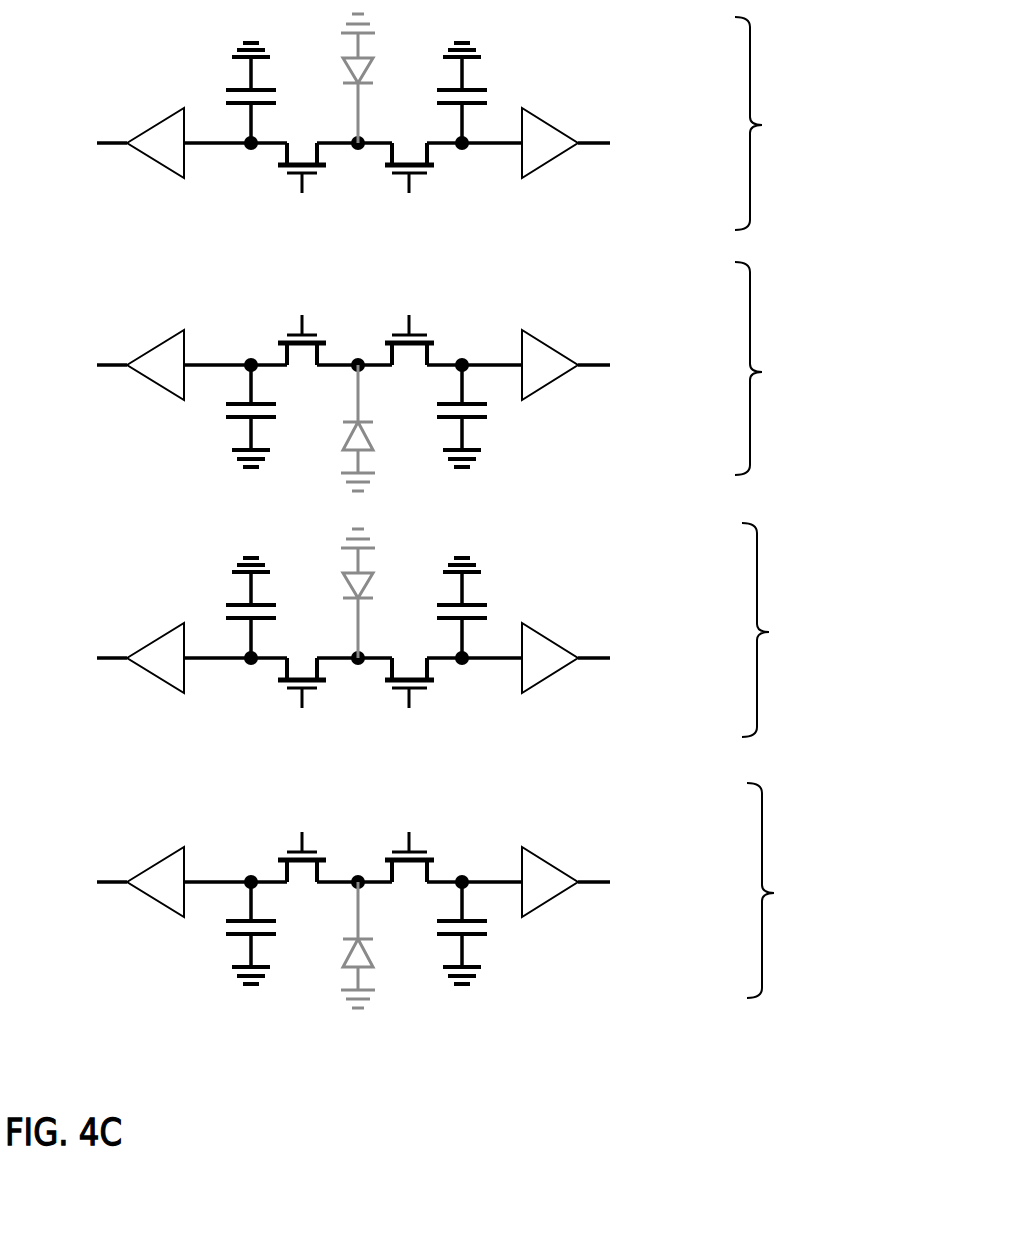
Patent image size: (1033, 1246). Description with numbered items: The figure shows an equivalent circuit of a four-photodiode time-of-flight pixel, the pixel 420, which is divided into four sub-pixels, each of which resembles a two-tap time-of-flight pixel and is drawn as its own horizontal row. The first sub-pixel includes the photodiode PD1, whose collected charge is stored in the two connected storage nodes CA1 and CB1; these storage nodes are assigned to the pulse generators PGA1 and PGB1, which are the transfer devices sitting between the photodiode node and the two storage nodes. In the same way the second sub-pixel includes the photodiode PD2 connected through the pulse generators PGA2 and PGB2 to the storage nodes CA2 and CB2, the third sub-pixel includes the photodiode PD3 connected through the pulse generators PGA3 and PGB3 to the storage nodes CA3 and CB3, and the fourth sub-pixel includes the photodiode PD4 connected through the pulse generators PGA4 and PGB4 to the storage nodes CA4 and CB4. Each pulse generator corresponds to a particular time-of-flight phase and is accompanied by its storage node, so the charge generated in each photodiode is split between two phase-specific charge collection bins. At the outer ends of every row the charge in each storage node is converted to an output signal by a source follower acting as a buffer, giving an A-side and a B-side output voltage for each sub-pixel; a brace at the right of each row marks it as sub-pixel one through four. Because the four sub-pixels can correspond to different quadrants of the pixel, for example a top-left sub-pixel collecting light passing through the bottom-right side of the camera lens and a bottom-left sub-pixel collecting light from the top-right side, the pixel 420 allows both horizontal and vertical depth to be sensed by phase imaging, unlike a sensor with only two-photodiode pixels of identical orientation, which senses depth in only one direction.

The pixel 420 is at (117, 39).
The pulse generator A of sub-pixel 1 PGA1 is at (297, 184).
The pulse generator B of sub-pixel 1 PGB1 is at (409, 184).
The storage node A of sub-pixel 1 CA1 is at (229, 90).
The storage node B of sub-pixel 1 CB1 is at (488, 90).
The photodiode of sub-pixel 1 PD1 is at (383, 78).
The pulse generator A of sub-pixel 2 PGA2 is at (297, 324).
The pulse generator B of sub-pixel 2 PGB2 is at (409, 324).
The storage node A of sub-pixel 2 CA2 is at (229, 419).
The storage node B of sub-pixel 2 CB2 is at (488, 419).
The photodiode of sub-pixel 2 PD2 is at (384, 428).
The pulse generator A of sub-pixel 3 PGA3 is at (297, 699).
The pulse generator B of sub-pixel 3 PGB3 is at (409, 699).
The storage node A of sub-pixel 3 CA3 is at (229, 605).
The storage node B of sub-pixel 3 CB3 is at (488, 605).
The photodiode of sub-pixel 3 PD3 is at (383, 593).
The pulse generator A of sub-pixel 4 PGA4 is at (297, 841).
The pulse generator B of sub-pixel 4 PGB4 is at (409, 841).
The storage node A of sub-pixel 4 CA4 is at (229, 936).
The storage node B of sub-pixel 4 CB4 is at (488, 936).
The photodiode of sub-pixel 4 PD4 is at (384, 945).